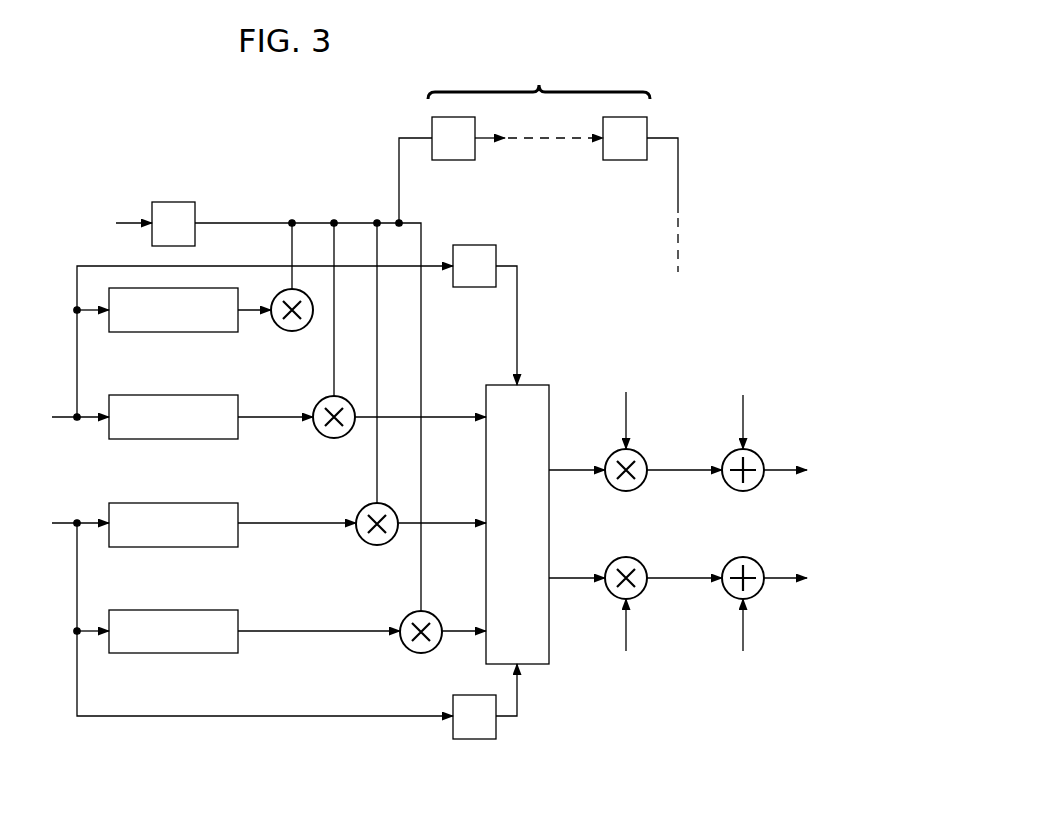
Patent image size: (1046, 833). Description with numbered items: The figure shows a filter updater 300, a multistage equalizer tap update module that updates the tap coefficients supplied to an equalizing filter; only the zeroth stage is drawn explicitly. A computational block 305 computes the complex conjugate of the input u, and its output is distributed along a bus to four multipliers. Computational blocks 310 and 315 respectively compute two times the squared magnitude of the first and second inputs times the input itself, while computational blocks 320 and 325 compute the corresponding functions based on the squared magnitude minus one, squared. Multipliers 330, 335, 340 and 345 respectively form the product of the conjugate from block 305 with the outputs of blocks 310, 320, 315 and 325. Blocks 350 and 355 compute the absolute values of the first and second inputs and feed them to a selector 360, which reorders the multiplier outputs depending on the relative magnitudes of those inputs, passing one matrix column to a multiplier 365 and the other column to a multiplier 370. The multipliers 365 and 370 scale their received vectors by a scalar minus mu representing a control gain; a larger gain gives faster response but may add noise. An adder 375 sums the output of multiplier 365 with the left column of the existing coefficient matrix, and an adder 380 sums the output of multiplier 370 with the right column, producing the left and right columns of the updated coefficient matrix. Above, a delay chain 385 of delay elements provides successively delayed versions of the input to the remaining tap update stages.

The filter updater 300 is at (691, 61).
The computational block 305 is at (172, 201).
The computational block 310 is at (172, 333).
The computational block 315 is at (172, 548).
The computational block 320 is at (172, 440).
The computational block 325 is at (172, 654).
The multiplier 330 is at (284, 330).
The multiplier 335 is at (325, 437).
The multiplier 340 is at (368, 544).
The multiplier 345 is at (412, 652).
The block 350 is at (476, 288).
The block 355 is at (476, 740).
The selector 360 is at (545, 524).
The multiplier 365 is at (634, 490).
The multiplier 370 is at (634, 597).
The adder 375 is at (751, 490).
The adder 380 is at (751, 597).
The delay chain 385 is at (452, 161).